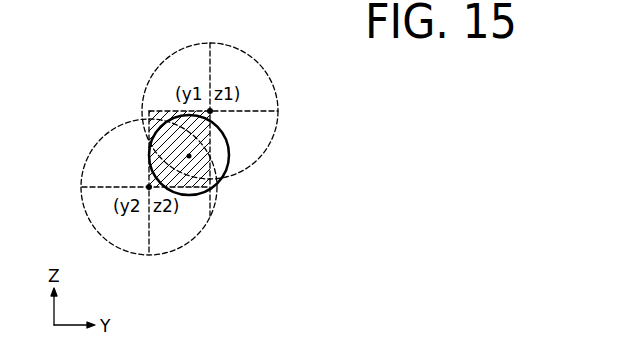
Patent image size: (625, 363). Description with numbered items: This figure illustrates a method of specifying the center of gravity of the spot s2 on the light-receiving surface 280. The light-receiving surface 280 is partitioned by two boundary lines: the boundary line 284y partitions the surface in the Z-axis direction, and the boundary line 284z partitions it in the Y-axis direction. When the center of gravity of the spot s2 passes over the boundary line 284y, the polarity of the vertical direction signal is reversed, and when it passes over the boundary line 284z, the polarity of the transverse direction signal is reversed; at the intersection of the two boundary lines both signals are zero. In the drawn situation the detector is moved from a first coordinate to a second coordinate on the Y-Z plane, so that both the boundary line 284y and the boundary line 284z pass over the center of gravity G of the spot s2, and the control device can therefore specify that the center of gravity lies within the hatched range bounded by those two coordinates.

The light-receiving surface 280 is at (276, 135).
The boundary line 284z is at (210, 52).
The boundary line 284y is at (275, 104).
The spot s2 is at (222, 180).